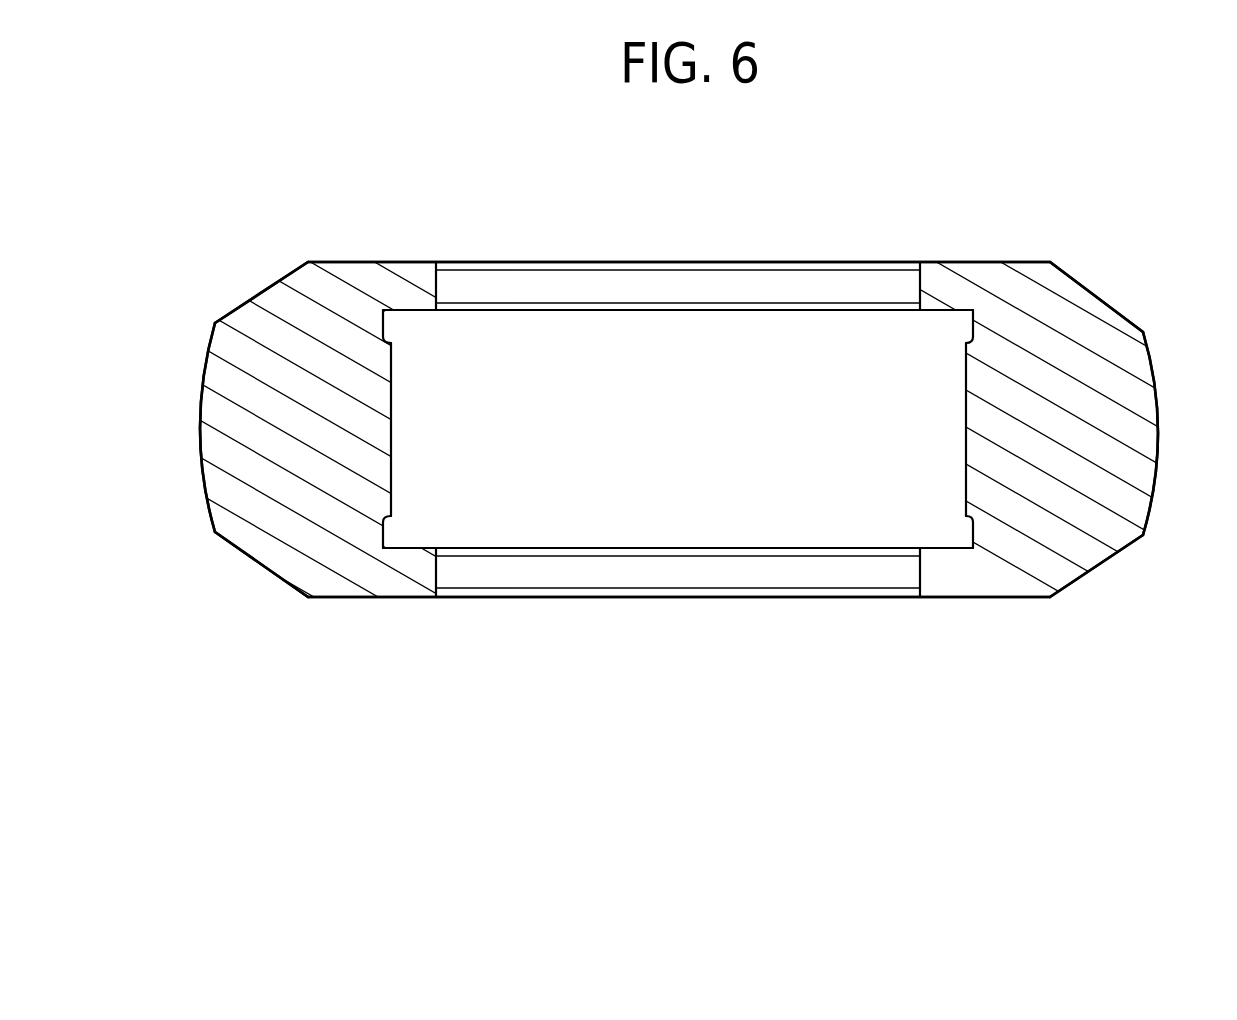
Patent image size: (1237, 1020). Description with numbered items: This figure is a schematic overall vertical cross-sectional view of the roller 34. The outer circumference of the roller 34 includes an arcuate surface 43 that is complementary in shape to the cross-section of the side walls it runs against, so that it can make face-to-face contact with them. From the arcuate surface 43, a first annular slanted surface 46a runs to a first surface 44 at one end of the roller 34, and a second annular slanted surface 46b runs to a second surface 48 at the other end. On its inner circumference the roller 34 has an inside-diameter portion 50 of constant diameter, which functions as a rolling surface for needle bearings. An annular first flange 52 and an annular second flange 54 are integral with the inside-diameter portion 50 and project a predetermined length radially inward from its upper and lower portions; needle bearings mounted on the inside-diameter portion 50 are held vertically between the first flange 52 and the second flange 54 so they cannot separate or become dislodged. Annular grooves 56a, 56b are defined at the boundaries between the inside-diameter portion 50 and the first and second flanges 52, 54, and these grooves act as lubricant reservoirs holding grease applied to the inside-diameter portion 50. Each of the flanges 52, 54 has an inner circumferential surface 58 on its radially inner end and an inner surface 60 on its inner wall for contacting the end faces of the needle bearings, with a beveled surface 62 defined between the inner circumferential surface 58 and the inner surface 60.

The roller 34 is at (913, 131).
The arcuate surface 43 is at (200, 431).
The first surface 44 is at (345, 598).
The first annular slanted surface 46a is at (262, 566).
The second annular slanted surface 46b is at (252, 299).
The second surface 48 is at (983, 263).
The inside-diameter portion 50 is at (396, 382).
The first flange 52 is at (690, 282).
The second flange 54 is at (937, 578).
The annular groove 56a is at (392, 306).
The annular groove 56b is at (391, 549).
The inner circumferential surface 58 is at (438, 272).
The inner surface 60 is at (937, 312).
The beveled surface 62 is at (442, 311).